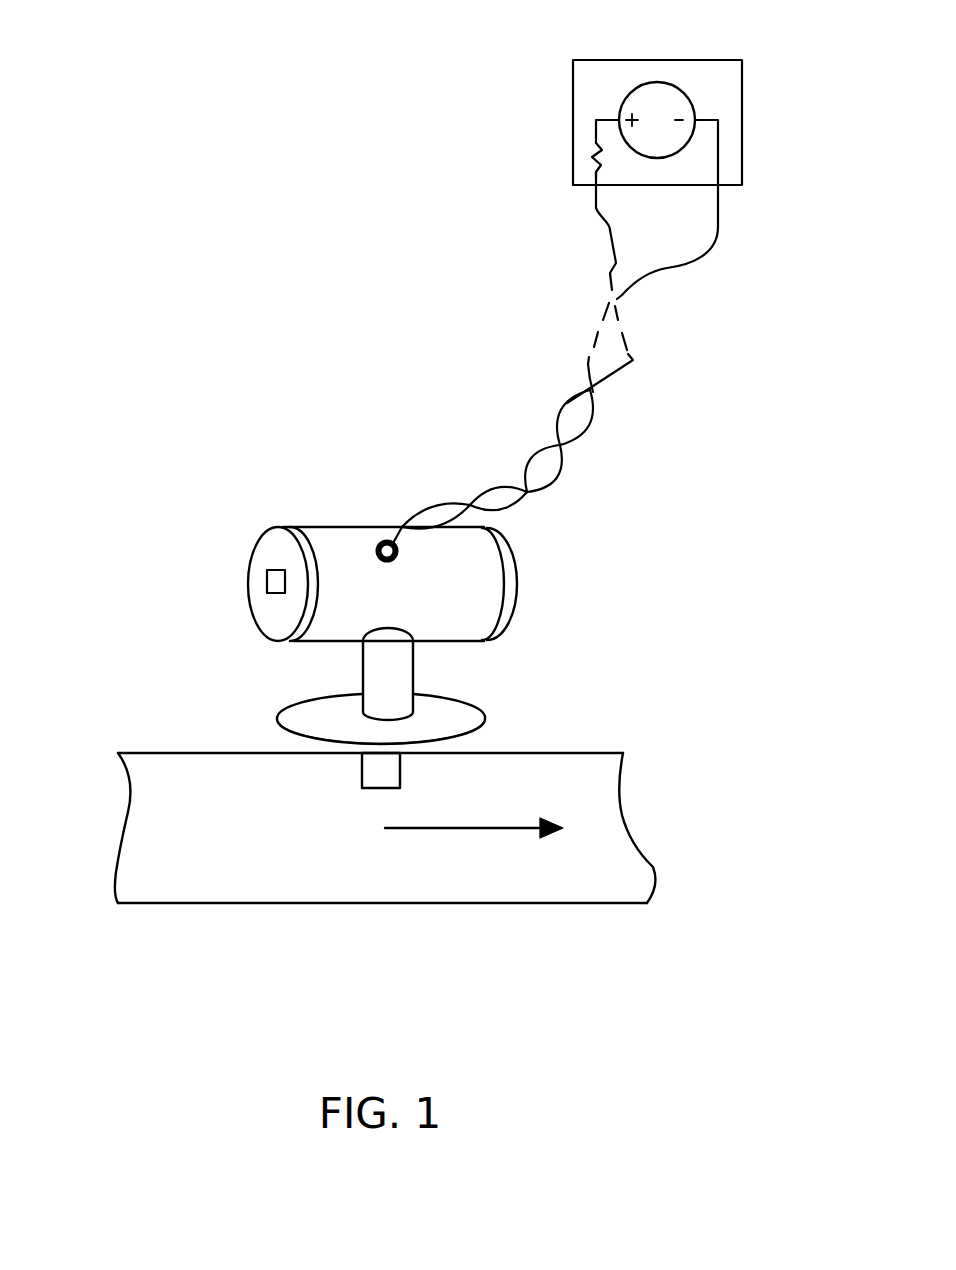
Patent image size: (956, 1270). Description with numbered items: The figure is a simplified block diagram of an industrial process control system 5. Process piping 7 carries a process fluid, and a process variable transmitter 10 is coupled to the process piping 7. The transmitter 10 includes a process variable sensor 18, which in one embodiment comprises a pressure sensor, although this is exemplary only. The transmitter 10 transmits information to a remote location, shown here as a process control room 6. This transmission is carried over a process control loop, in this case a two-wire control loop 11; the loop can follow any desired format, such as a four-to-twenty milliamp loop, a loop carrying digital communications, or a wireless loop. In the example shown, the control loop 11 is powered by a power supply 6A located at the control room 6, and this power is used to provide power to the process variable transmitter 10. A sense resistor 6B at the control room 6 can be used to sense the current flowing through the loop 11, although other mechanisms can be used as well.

The industrial process control system 5 is at (347, 153).
The process control room 6 is at (675, 59).
The power supply 6A is at (643, 82).
The sense resistor 6B is at (592, 162).
The process piping 7 is at (522, 782).
The process variable transmitter 10 is at (515, 572).
The 2-wire control loop 11 is at (557, 408).
The process variable sensor 18 is at (362, 767).